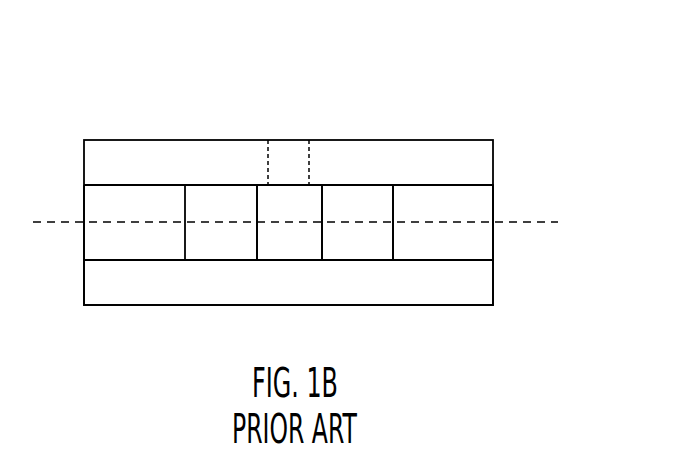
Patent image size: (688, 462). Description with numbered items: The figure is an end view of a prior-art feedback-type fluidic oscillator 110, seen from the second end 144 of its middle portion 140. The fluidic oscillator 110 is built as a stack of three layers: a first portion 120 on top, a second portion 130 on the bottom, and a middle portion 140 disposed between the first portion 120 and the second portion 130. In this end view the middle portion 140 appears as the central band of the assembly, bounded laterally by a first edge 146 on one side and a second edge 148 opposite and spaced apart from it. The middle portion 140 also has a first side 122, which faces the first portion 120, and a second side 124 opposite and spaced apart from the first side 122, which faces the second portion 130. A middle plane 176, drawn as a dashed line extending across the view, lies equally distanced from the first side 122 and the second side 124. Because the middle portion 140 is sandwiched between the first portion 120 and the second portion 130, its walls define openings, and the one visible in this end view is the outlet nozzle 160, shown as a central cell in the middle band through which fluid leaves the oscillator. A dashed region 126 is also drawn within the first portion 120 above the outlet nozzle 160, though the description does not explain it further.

The feedback-type fluidic oscillator 110 is at (487, 100).
The first portion 120 is at (123, 162).
The first side 122 is at (168, 185).
The second side 124 is at (148, 260).
The dashed region 126 is at (288, 157).
The second portion 130 is at (442, 283).
The middle portion 140 is at (470, 220).
The second end 144 is at (435, 205).
The first edge 146 is at (83, 242).
The second edge 148 is at (493, 238).
The outlet nozzle 160 is at (282, 243).
The middle plane 176 is at (543, 225).